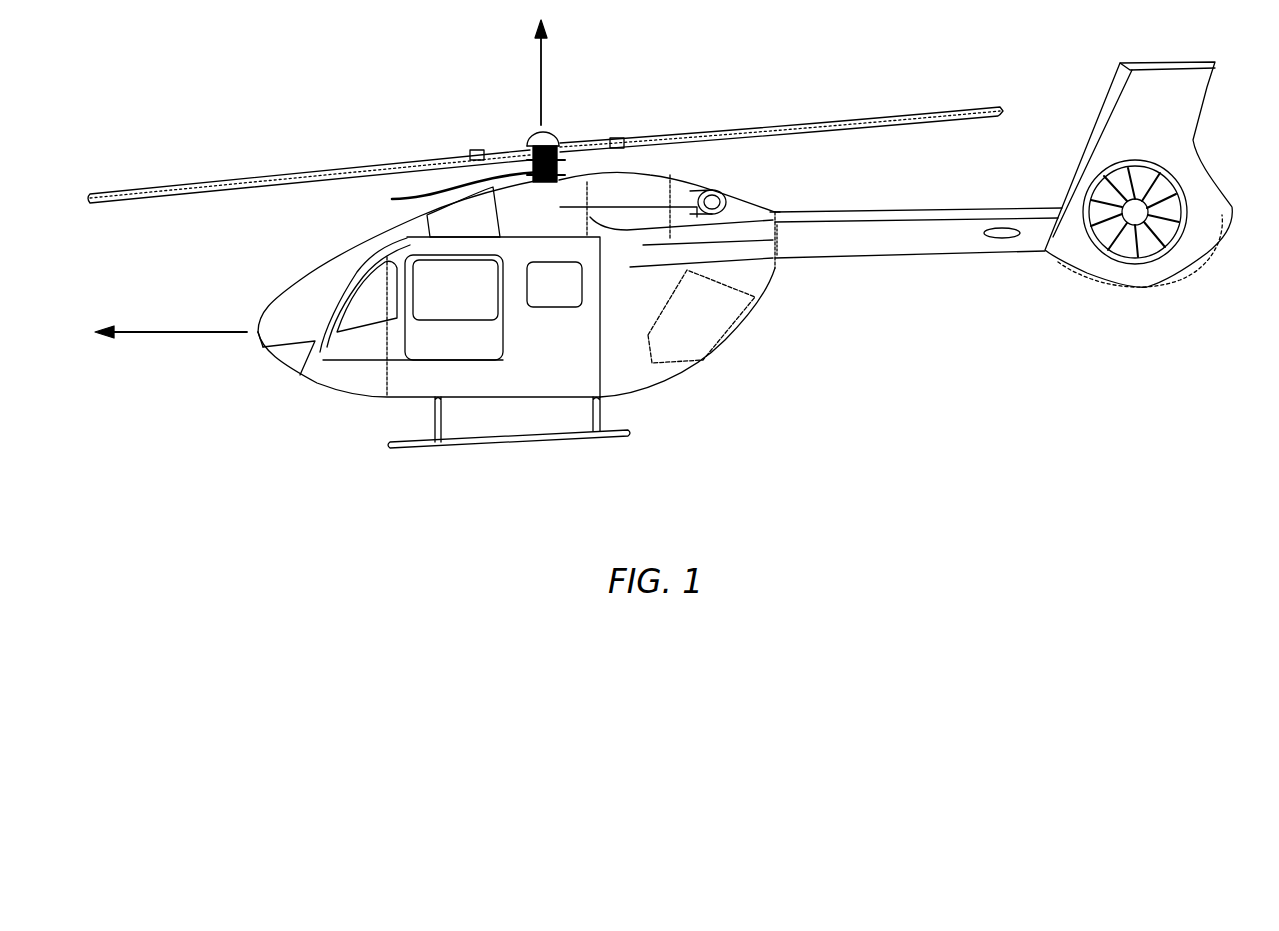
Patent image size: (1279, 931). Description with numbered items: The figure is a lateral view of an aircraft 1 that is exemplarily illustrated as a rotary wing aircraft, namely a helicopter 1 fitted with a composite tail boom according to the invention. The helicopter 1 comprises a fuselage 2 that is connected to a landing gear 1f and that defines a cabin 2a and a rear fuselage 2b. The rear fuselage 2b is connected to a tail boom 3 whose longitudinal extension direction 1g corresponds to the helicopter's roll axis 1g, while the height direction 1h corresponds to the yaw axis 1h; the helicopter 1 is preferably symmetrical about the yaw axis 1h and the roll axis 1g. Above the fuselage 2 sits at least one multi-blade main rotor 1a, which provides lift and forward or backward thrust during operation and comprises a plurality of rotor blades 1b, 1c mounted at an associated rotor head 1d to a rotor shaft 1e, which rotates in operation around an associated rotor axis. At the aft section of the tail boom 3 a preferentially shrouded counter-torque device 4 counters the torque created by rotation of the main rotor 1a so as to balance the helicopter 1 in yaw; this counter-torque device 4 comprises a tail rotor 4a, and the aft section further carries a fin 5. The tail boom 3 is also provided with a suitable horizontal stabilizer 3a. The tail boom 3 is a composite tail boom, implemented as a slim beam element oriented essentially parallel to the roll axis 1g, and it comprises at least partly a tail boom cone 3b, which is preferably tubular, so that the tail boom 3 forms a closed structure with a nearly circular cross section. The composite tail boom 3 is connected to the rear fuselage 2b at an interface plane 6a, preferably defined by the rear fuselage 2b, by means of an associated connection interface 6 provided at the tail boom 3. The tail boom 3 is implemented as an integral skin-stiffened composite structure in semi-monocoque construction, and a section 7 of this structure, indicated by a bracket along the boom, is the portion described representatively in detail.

The helicopter 1 is at (207, 84).
The multi-blade main rotor 1a is at (906, 86).
The rotor blade 1b is at (148, 185).
The rotor blade 1c is at (1002, 113).
The rotor head 1d is at (572, 124).
The rotor shaft 1e is at (448, 192).
The landing gear 1f is at (505, 445).
The roll axis 1g is at (168, 332).
The yaw axis 1h is at (541, 82).
The fuselage 2 is at (622, 360).
The cabin 2a is at (364, 304).
The rear fuselage 2b is at (772, 284).
The composite tail boom 3 is at (950, 225).
The horizontal stabilizer 3a is at (1000, 240).
The tail boom cone 3b is at (795, 197).
The counter-torque device 4 is at (1195, 172).
The tail rotor 4a is at (1150, 247).
The fin 5 is at (1172, 72).
The connection interface 6 is at (792, 234).
The interface plane 6a is at (775, 196).
The section 7 is at (788, 266).